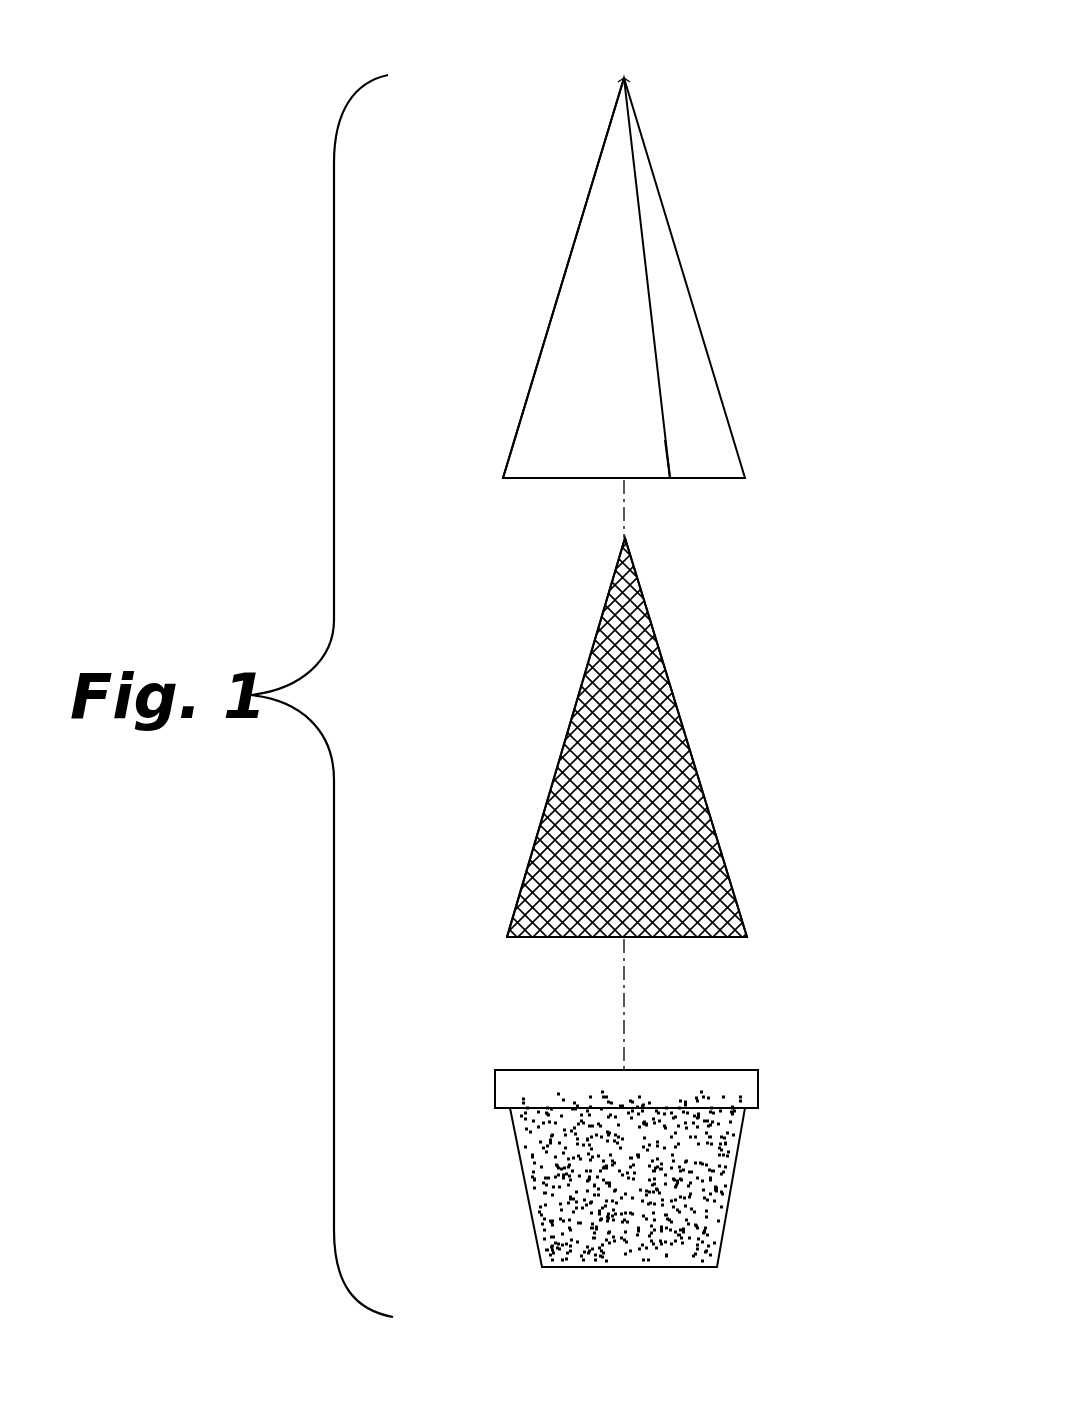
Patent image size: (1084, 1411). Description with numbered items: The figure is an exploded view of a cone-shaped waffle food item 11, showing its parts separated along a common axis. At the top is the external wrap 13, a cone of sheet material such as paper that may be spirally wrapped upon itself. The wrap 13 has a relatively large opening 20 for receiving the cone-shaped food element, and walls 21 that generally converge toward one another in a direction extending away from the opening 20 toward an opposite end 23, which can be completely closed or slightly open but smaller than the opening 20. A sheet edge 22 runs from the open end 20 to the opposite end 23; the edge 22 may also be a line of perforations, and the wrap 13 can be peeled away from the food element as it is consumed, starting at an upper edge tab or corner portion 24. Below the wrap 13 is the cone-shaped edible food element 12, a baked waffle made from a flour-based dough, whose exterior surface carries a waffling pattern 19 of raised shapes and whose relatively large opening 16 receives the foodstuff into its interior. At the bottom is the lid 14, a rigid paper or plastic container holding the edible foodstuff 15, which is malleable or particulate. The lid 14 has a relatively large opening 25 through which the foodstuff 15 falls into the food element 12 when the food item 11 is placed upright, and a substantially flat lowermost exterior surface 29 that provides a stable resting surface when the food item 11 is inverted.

The food item 11 is at (808, 84).
The cone-shaped edible food element 12 is at (675, 690).
The external wrap 13 is at (710, 352).
The lid 14 is at (758, 1085).
The edible foodstuff 15 is at (716, 1150).
The opening 16 is at (682, 952).
The waffling pattern 19 is at (560, 772).
The opening 20 is at (698, 496).
The walls 21 is at (566, 404).
The sheet edge 22 is at (645, 257).
The opposite end 23 is at (624, 78).
The upper edge tab or corner portion 24 is at (666, 484).
The opening 25 is at (526, 1056).
The lowermost exterior surface 29 is at (600, 1268).